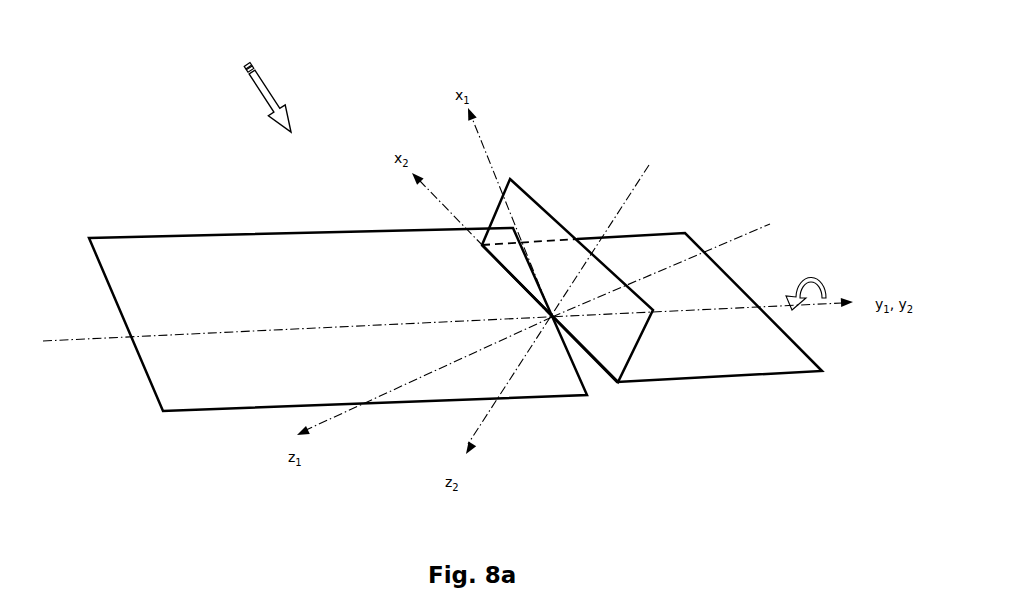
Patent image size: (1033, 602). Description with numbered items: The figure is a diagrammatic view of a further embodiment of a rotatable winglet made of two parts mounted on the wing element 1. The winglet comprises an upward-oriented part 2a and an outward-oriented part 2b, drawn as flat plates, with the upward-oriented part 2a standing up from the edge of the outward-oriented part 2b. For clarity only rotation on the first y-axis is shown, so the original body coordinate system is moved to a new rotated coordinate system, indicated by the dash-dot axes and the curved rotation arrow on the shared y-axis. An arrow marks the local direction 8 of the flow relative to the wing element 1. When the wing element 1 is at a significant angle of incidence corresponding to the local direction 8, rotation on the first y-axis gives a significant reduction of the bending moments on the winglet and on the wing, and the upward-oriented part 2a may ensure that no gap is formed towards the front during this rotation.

The wing element 1 is at (238, 207).
The upward-oriented part 2a is at (608, 359).
The outward-oriented part 2b is at (676, 214).
The local direction 8 is at (295, 86).